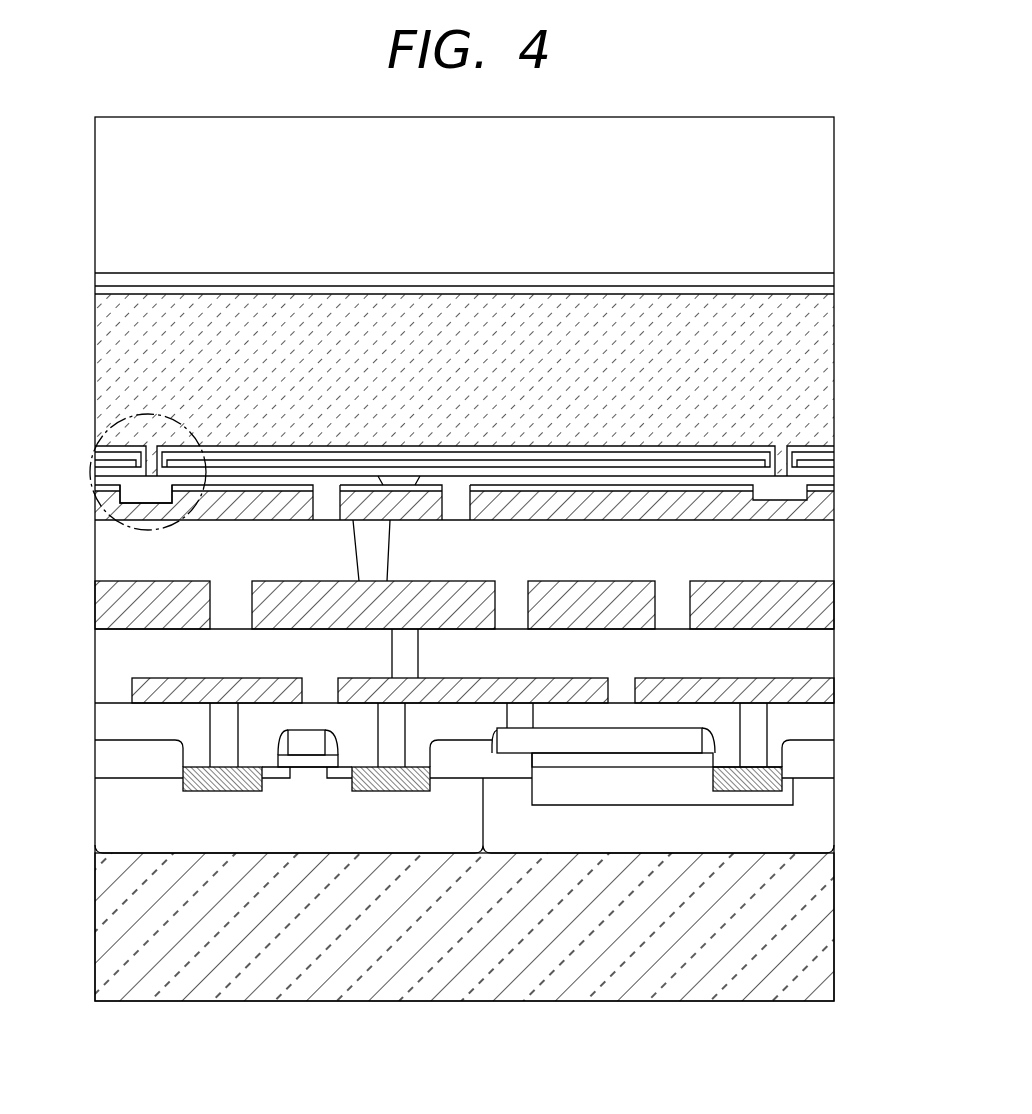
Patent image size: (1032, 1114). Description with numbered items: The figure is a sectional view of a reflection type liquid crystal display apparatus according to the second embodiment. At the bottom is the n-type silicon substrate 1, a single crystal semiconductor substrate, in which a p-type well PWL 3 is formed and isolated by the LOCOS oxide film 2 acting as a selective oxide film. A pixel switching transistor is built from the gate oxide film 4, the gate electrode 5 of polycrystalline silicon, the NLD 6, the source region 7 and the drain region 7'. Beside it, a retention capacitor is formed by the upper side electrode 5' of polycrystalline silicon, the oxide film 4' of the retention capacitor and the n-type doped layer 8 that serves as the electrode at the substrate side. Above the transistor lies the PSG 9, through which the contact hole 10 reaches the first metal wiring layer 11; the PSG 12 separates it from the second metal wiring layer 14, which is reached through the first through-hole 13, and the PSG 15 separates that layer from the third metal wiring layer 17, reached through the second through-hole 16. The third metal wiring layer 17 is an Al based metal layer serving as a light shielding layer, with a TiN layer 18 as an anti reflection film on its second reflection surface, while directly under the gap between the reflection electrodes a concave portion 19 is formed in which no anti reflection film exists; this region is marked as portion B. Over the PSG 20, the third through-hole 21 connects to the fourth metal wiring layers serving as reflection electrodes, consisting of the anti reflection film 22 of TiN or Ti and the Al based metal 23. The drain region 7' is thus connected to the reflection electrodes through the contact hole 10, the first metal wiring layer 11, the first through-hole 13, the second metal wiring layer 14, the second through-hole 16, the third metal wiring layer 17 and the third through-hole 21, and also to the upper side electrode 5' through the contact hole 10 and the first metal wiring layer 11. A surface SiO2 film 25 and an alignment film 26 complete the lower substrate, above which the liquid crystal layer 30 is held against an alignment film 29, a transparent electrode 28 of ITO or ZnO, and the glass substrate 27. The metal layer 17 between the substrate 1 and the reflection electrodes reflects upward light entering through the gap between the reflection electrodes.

The n-type silicon substrate 1 is at (487, 1003).
The LOCOS oxide film 2 is at (105, 760).
The PWL 3 is at (105, 813).
The gate oxide film 4 is at (308, 795).
The oxide film of a retention capacitor 4' is at (622, 801).
The gate electrode 5 is at (292, 696).
The upper side electrode 5' is at (637, 788).
The NLD 6 is at (338, 780).
The source region 7 is at (222, 804).
The drain region 7' is at (391, 804).
The n-type doped layer 8 is at (563, 795).
The PSG 9 is at (322, 710).
The contact hole 10 is at (760, 723).
The first metal wiring layer 11 is at (130, 687).
The PSG 12 is at (105, 648).
The first through-hole 13 is at (413, 653).
The second metal wiring layer 14 is at (105, 598).
The PSG 15 is at (105, 563).
The second through-hole 16 is at (385, 553).
The third metal wiring layer 17 is at (285, 508).
The TiN layer 18 is at (543, 488).
The concave portion 19 is at (112, 493).
The PSG 20 is at (216, 483).
The third through-hole 21 is at (402, 480).
The anti reflection film 22 is at (817, 475).
The Al based metal 23 is at (108, 465).
The surface SiO2 film 25 is at (110, 453).
The alignment film 26 is at (825, 448).
The glass substrate 27 is at (818, 163).
The transparent electrode 28 is at (818, 283).
The alignment film 29 is at (108, 295).
The liquid crystal layer 30 is at (818, 333).
The portion B is at (133, 395).